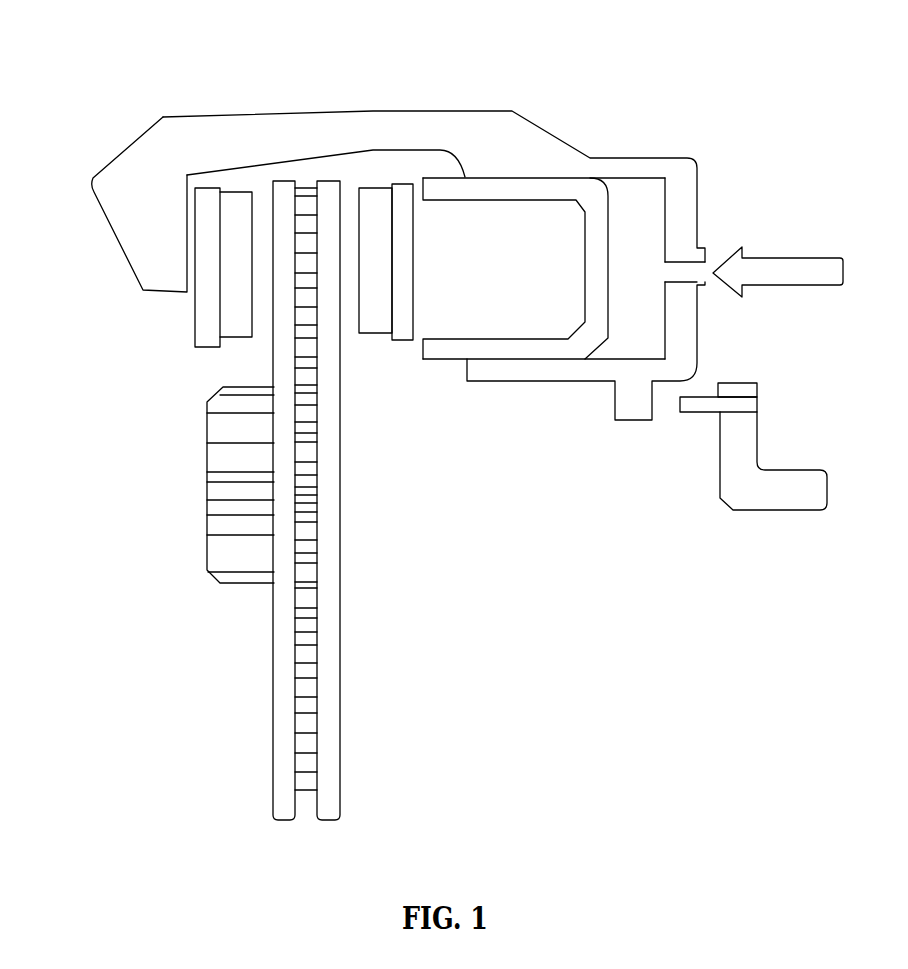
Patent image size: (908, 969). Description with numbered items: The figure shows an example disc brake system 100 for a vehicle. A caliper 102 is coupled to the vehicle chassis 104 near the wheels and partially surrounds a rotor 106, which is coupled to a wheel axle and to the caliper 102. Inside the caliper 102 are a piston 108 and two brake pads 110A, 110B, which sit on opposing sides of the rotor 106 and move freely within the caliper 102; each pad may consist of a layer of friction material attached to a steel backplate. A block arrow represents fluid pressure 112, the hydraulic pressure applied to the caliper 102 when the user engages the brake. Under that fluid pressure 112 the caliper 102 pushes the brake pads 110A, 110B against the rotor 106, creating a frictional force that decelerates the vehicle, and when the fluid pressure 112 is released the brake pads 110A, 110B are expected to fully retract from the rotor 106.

The disc brake system 100 is at (792, 54).
The caliper 102 is at (378, 110).
The chassis 104 is at (790, 467).
The rotor 106 is at (341, 684).
The piston 108 is at (585, 275).
The brake pad 110A is at (195, 317).
The brake pad 110B is at (375, 335).
The fluid pressure 112 is at (785, 257).